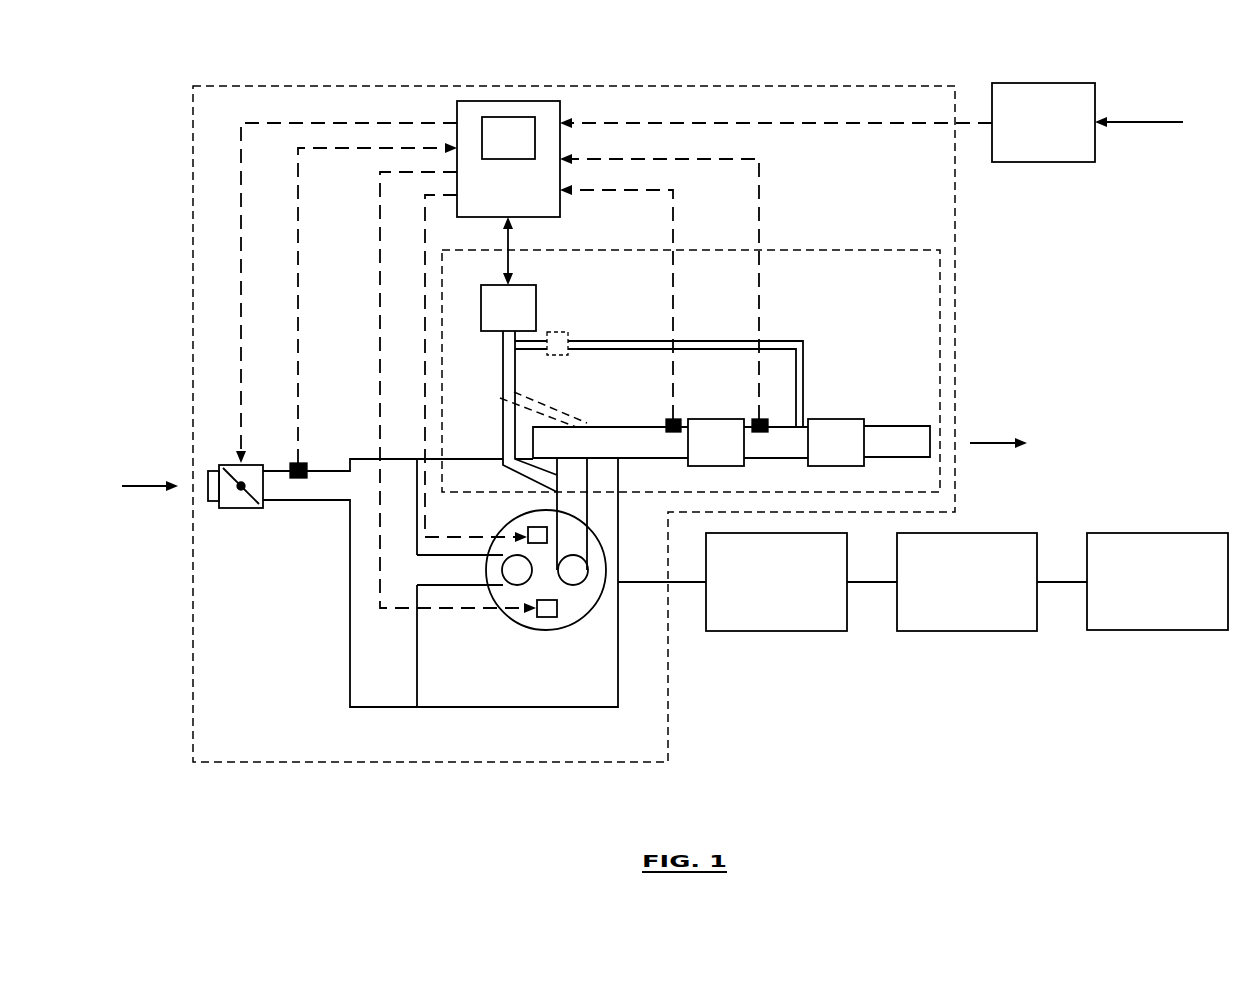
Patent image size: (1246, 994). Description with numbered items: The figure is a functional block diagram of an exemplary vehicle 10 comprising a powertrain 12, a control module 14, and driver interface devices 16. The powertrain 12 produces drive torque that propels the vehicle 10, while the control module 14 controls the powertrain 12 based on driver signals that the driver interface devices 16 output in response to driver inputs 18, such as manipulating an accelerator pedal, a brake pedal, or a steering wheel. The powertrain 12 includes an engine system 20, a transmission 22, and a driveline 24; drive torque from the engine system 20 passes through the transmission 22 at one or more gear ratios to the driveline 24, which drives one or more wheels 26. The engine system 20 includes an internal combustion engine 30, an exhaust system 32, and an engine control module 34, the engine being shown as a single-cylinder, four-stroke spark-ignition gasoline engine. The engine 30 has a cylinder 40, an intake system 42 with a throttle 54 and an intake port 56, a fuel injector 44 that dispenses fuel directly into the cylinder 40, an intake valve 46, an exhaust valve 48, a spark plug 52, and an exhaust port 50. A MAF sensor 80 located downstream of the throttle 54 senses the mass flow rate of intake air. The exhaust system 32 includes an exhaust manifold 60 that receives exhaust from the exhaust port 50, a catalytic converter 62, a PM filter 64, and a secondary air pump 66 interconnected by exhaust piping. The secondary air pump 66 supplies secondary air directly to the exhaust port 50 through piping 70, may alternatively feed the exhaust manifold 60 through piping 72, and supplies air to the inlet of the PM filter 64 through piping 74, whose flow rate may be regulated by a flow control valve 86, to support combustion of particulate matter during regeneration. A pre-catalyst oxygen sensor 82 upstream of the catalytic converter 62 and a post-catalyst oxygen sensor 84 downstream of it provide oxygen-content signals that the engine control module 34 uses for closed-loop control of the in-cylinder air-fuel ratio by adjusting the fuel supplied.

The vehicle 10 is at (122, 75).
The powertrain 12 is at (923, 644).
The control module 14 is at (515, 135).
The driver interface devices 16 is at (1040, 83).
The driver inputs 18 is at (1143, 122).
The engine system 20 is at (193, 222).
The transmission 22 is at (775, 631).
The driveline 24 is at (968, 631).
The wheels 26 is at (1160, 630).
The internal combustion engine 30 is at (350, 582).
The exhaust system 32 is at (827, 249).
The engine control module 34 is at (524, 117).
The cylinder 40 is at (532, 591).
The intake system 42 is at (333, 471).
The fuel injector 44 is at (528, 532).
The intake valve 46 is at (507, 577).
The exhaust valve 48 is at (572, 586).
The exhaust port 50 is at (572, 508).
The spark plug 52 is at (547, 617).
The throttle 54 is at (253, 465).
The intake port 56 is at (477, 575).
The exhaust manifold 60 is at (595, 427).
The catalytic converter 62 is at (715, 419).
The PM filter 64 is at (837, 419).
The secondary air pump 66 is at (537, 303).
The piping 70 is at (502, 412).
The piping 72 is at (560, 414).
The piping 74 is at (803, 341).
The MAF sensor 80 is at (303, 463).
The pre-catalyst oxygen sensor 82 is at (673, 419).
The post-catalyst oxygen sensor 84 is at (753, 419).
The flow control valve 86 is at (575, 333).